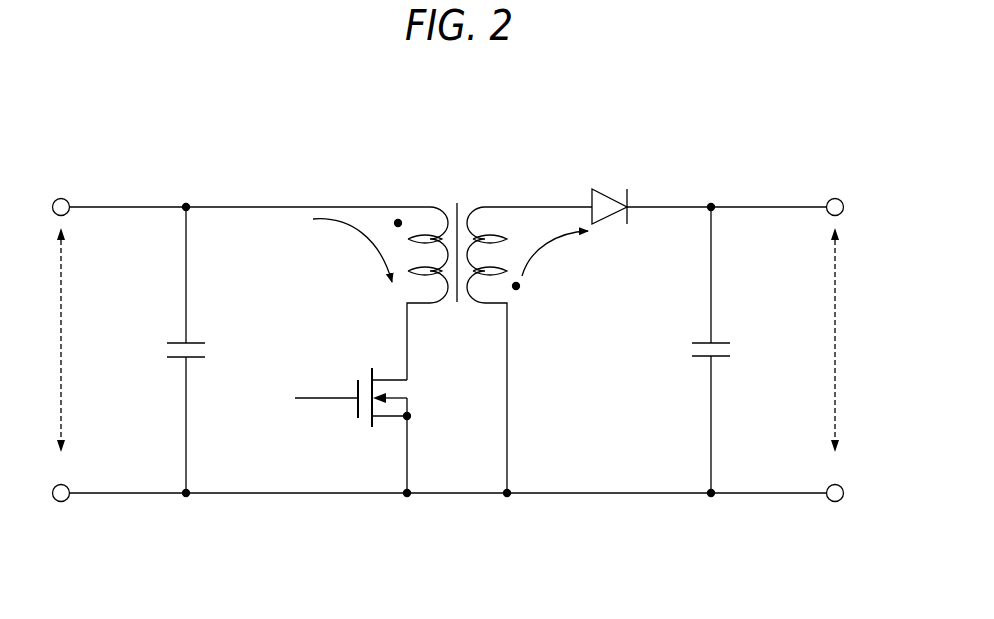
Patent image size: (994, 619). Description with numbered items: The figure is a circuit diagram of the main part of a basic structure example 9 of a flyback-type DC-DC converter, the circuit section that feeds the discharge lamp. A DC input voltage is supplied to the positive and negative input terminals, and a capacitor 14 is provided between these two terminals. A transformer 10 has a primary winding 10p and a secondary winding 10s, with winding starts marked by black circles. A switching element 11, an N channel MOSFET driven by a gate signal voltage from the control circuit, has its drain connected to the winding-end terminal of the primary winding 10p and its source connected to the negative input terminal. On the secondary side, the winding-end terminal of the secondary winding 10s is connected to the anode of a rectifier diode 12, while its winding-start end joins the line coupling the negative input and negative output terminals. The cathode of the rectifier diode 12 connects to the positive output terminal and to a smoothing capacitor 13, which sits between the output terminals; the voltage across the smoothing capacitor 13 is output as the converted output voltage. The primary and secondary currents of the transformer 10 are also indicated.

The basic structure example of a DC-DC converter of a flyback type 9 is at (276, 152).
The transformer 10 is at (512, 126).
The primary winding 10p is at (421, 204).
The secondary winding 10s is at (489, 204).
The switching element 11 is at (353, 386).
The rectifier diode 12 is at (600, 190).
The smoothing capacitor 13 is at (727, 342).
The capacitor 14 is at (172, 344).